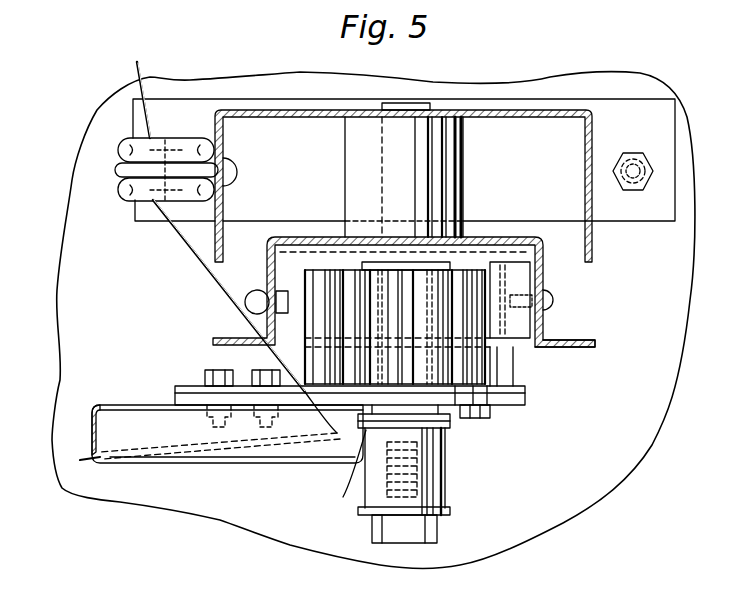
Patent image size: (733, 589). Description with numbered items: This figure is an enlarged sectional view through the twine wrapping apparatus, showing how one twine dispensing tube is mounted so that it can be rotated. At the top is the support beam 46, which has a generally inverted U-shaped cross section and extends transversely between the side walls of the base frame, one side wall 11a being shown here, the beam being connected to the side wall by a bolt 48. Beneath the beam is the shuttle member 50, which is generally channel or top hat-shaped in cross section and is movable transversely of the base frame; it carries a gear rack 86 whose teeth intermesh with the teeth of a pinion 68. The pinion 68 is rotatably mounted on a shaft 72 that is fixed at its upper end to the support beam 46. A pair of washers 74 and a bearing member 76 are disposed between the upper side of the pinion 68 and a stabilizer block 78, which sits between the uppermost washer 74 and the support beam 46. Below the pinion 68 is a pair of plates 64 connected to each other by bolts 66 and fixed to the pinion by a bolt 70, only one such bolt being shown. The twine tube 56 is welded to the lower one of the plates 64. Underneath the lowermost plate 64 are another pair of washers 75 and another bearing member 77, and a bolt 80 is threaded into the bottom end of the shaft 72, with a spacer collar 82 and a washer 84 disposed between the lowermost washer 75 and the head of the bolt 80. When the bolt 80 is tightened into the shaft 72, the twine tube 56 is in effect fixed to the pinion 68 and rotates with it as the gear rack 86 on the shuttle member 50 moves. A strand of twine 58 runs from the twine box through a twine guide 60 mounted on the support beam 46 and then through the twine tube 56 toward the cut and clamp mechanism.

The side wall 11a is at (149, 256).
The support beam 46 is at (590, 152).
The bolt 48 is at (633, 192).
The shuttle member 50 is at (575, 340).
The twine tube 56 is at (188, 460).
The twine 58 is at (92, 462).
The twine guide 60 is at (181, 145).
The plate 64 is at (175, 396).
The bolt 66 is at (262, 370).
The pinion 68 is at (510, 370).
The bolt 70 is at (488, 420).
The shaft 72 is at (382, 160).
The washer 74 is at (483, 258).
The washer 75 is at (455, 420).
The bearing member 76 is at (360, 258).
The bearing member 77 is at (374, 430).
The stabilizer block 78 is at (463, 175).
The bolt 80 is at (438, 533).
The spacer collar 82 is at (447, 467).
The washer 84 is at (448, 512).
The gear rack 86 is at (517, 325).